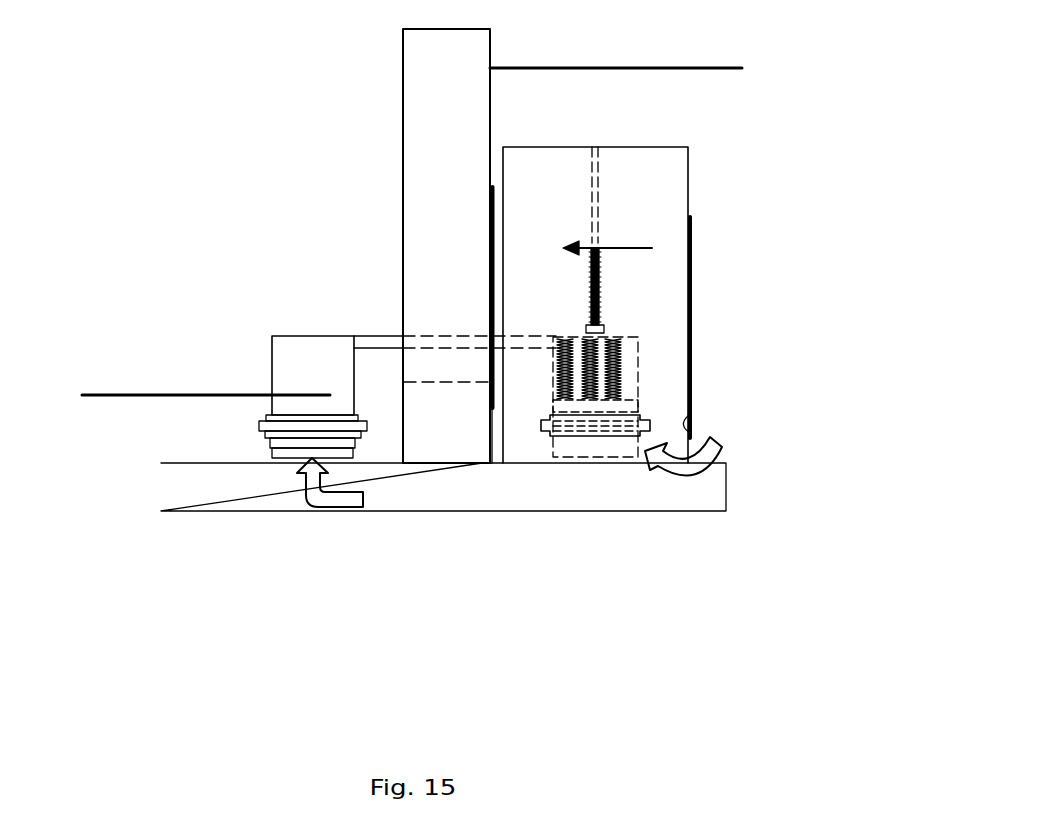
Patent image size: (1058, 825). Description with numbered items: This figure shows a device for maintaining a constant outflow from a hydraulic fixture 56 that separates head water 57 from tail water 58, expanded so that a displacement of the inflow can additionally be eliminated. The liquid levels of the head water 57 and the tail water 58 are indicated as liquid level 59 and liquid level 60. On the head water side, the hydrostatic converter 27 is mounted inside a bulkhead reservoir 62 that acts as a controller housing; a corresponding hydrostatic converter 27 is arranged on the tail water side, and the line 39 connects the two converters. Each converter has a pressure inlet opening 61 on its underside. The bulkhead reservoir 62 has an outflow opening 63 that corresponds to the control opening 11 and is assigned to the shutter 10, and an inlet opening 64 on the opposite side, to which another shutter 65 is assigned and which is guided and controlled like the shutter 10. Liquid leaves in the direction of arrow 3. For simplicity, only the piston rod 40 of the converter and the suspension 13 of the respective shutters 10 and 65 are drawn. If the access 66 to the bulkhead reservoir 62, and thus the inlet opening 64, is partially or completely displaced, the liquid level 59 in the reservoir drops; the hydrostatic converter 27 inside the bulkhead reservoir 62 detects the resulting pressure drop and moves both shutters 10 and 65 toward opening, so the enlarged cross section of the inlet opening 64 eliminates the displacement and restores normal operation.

The arrow 3 is at (632, 250).
The shutter 10 is at (493, 372).
The control opening 11 is at (438, 445).
The suspension 13 is at (493, 227).
The hydrostatic converter 27 is at (287, 368).
The line 39 is at (435, 333).
The piston rod 40 is at (598, 188).
The hydraulic fixture 56 is at (415, 120).
The head water 57 is at (670, 119).
The tail water 58 is at (235, 445).
The liquid level of head water 59 is at (695, 66).
The liquid level of tail water 60 is at (126, 393).
The pressure inlet opening 61 is at (309, 505).
The bulkhead reservoir 62 is at (540, 165).
The outflow opening 63 is at (513, 443).
The inlet opening 64 is at (690, 425).
The shutter 65 is at (692, 302).
The access 66 is at (683, 482).